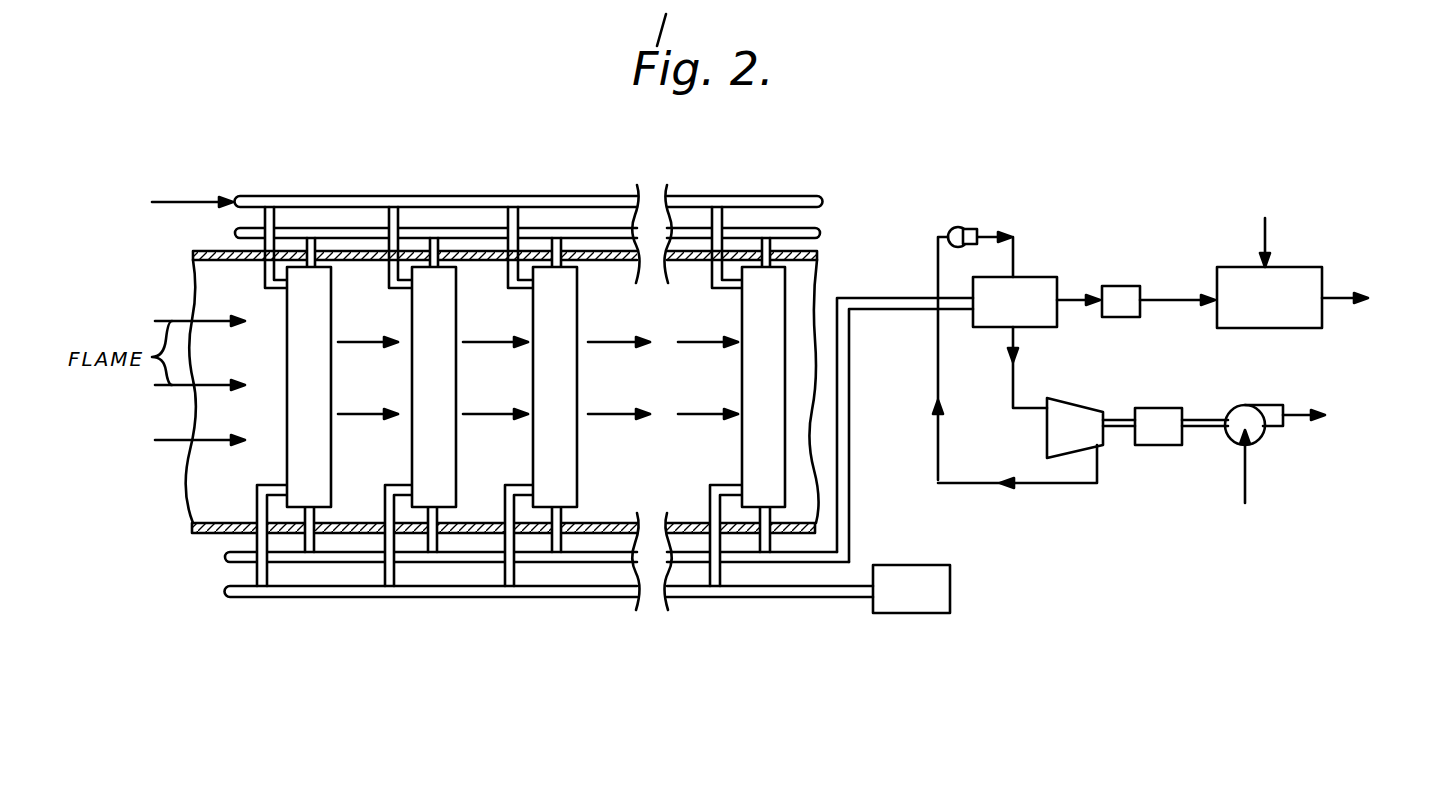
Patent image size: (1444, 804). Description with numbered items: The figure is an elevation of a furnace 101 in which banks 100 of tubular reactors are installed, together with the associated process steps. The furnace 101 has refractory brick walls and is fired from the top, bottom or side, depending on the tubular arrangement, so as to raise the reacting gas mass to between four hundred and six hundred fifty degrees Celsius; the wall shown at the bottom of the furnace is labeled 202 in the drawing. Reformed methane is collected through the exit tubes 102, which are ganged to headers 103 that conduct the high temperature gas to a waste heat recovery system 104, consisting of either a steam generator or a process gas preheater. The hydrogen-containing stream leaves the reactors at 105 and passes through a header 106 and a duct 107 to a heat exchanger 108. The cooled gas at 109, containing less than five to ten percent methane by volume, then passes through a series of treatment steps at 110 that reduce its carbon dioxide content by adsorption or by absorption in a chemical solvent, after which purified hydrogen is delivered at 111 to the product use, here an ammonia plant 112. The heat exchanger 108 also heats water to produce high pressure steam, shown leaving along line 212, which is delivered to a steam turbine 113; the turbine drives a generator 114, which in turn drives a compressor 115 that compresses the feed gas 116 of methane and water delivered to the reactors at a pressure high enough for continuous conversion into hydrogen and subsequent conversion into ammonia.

The banks of reactors 100 is at (318, 315).
The furnace 101 is at (183, 267).
The exit tubes 102 is at (262, 485).
The headers 103 is at (440, 597).
The waste heat recovery system 104 is at (913, 588).
The reactor exit for hydrogen-containing stream 105 is at (328, 545).
The header 106 is at (587, 597).
The duct 107 is at (849, 388).
The heat exchanger 108 is at (1043, 277).
The cooled gas 109 is at (1077, 303).
The treatment steps 110 is at (1123, 290).
The purified hydrogen delivery 111 is at (1176, 300).
The ammonia plant 112 is at (1312, 267).
The steam turbine 113 is at (1047, 447).
The generator 114 is at (1154, 446).
The compressor 115 is at (1263, 407).
The feed gas 116 is at (185, 200).
The furnace bottom wall 202 is at (200, 525).
The steam line 212 is at (1012, 382).